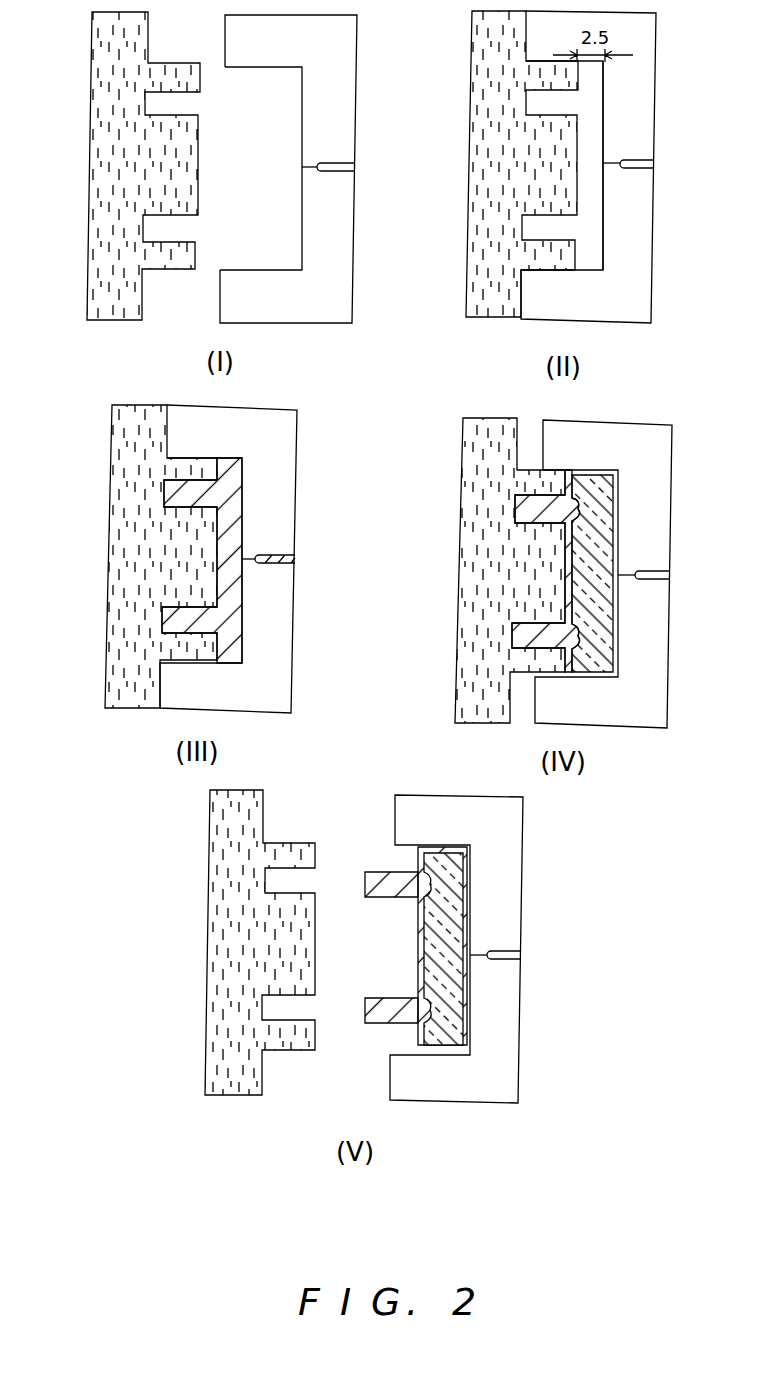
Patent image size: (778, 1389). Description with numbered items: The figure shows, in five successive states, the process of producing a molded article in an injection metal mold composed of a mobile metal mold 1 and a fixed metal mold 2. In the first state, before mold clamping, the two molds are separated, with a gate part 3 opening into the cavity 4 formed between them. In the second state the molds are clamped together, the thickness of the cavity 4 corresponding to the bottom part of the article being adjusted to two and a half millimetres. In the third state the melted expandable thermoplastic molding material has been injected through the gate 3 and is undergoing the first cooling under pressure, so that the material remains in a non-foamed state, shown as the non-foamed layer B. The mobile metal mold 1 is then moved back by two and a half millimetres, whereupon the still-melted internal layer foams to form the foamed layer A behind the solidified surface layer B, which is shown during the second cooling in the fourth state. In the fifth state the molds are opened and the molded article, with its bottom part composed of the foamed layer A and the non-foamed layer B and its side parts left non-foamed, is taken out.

The mobile metal mold 1 is at (118, 147).
The fixed metal mold 2 is at (333, 67).
The gate part 3 is at (298, 165).
The cavity 4 is at (260, 225).
The foamed layer A is at (605, 526).
The non-foamed layer B is at (225, 622).